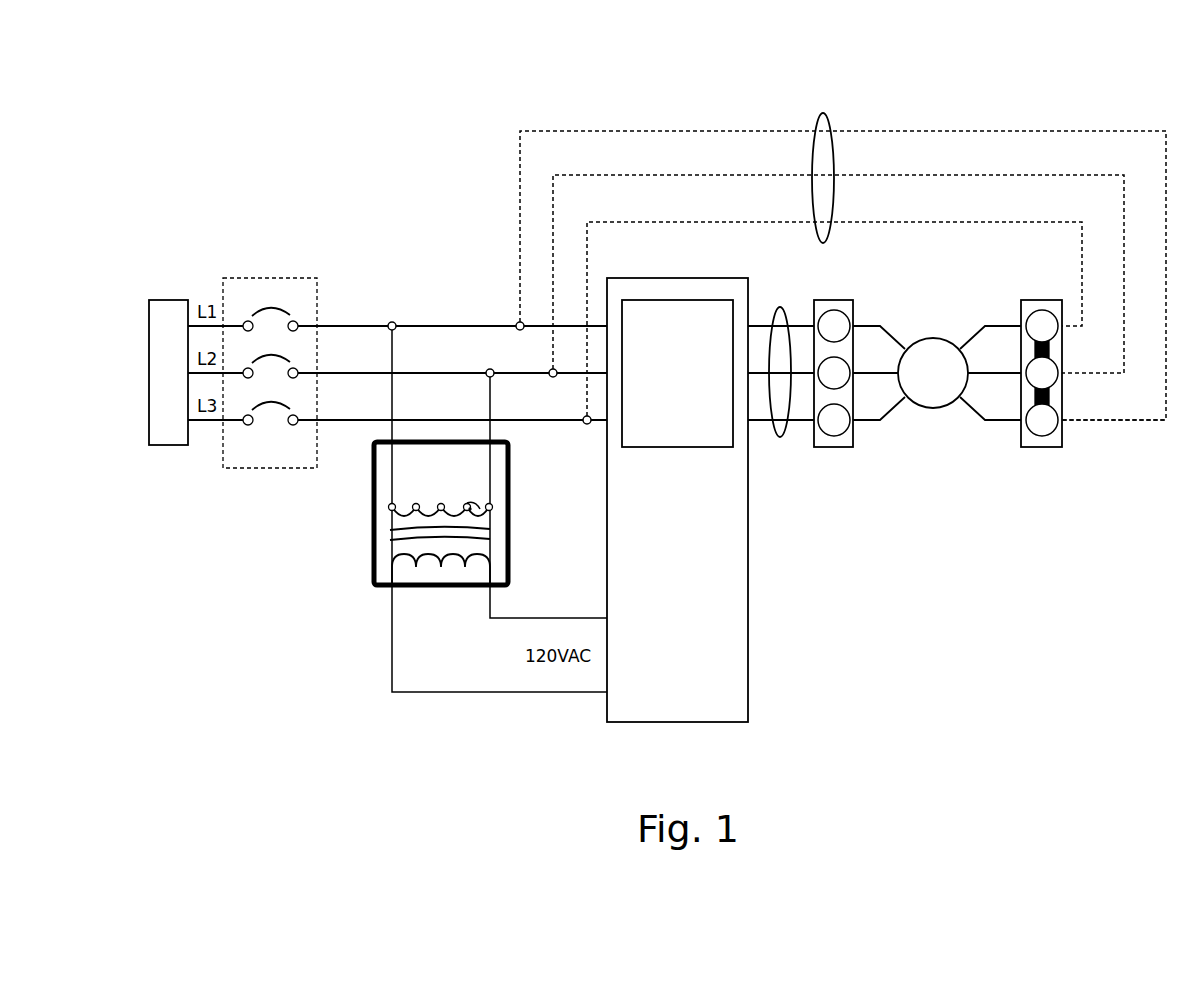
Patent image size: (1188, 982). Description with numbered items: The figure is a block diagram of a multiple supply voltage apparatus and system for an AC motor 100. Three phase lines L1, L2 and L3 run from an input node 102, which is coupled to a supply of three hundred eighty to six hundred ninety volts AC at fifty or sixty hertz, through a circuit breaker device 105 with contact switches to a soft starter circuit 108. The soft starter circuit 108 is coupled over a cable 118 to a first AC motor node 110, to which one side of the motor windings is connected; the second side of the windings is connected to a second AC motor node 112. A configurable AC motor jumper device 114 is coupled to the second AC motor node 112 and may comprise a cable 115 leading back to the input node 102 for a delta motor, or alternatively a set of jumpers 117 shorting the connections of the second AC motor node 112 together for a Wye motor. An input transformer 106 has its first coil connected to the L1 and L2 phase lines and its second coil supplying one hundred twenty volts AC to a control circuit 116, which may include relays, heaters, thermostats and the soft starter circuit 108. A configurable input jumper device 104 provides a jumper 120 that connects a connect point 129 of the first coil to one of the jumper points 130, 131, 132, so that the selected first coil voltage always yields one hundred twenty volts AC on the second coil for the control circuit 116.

The AC motor 100 is at (935, 408).
The input node 102 is at (170, 300).
The configurable input jumper device 104 is at (447, 514).
The circuit breaker device 105 is at (265, 278).
The input transformer 106 is at (490, 545).
The soft starter circuit 108 is at (678, 447).
The first AC motor node 110 is at (834, 447).
The second AC motor node 112 is at (1016, 398).
The configurable AC motor jumper device 114 is at (1152, 430).
The cable 115 is at (1077, 131).
The control circuit 116 is at (748, 695).
The set of jumpers 117 is at (1036, 396).
The cable 118 is at (780, 437).
The jumper 120 is at (478, 502).
The connect point 129 is at (492, 507).
The jumper point 130 is at (467, 507).
The jumper point 131 is at (441, 507).
The jumper point 132 is at (416, 507).